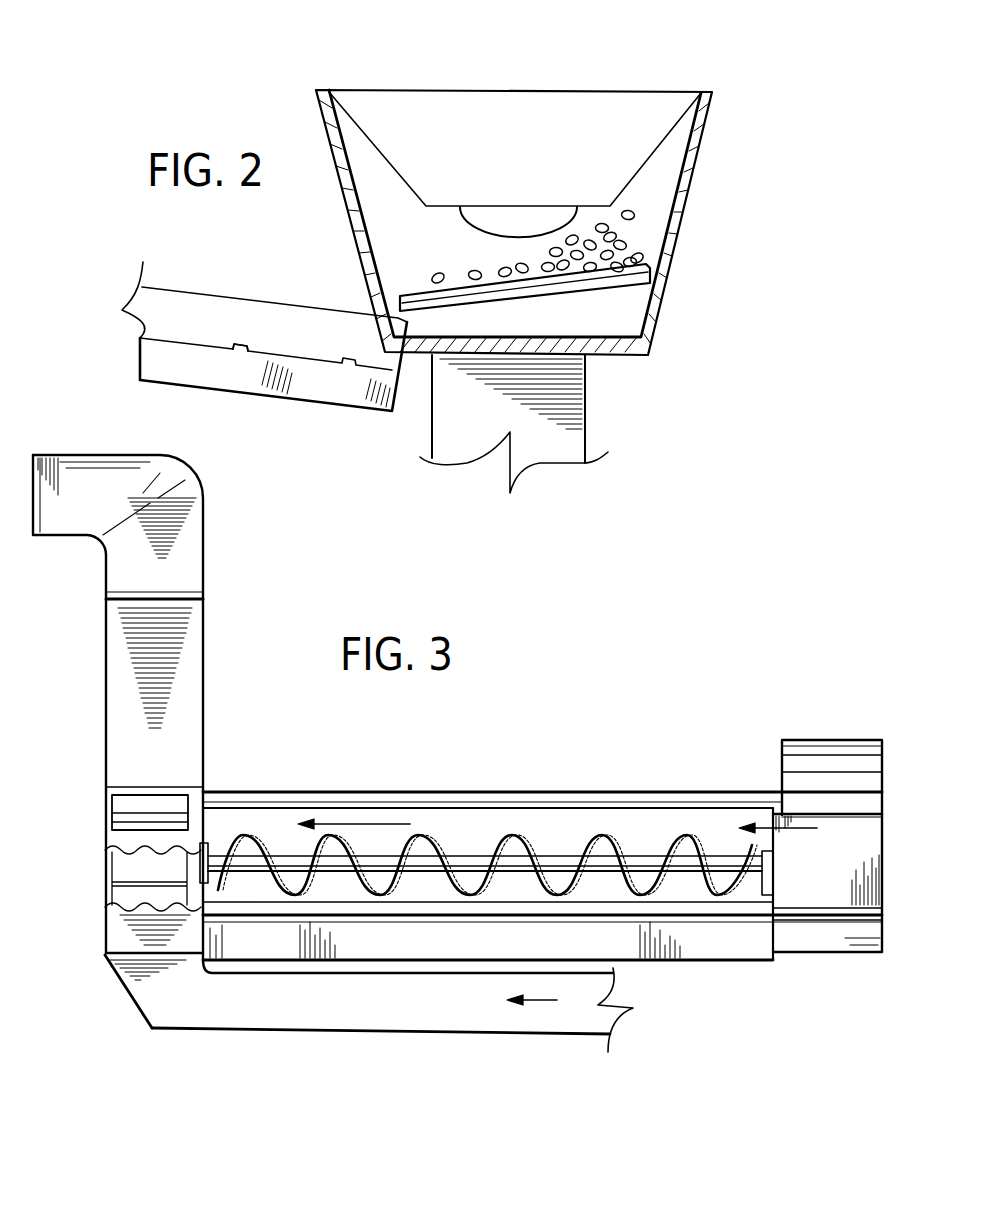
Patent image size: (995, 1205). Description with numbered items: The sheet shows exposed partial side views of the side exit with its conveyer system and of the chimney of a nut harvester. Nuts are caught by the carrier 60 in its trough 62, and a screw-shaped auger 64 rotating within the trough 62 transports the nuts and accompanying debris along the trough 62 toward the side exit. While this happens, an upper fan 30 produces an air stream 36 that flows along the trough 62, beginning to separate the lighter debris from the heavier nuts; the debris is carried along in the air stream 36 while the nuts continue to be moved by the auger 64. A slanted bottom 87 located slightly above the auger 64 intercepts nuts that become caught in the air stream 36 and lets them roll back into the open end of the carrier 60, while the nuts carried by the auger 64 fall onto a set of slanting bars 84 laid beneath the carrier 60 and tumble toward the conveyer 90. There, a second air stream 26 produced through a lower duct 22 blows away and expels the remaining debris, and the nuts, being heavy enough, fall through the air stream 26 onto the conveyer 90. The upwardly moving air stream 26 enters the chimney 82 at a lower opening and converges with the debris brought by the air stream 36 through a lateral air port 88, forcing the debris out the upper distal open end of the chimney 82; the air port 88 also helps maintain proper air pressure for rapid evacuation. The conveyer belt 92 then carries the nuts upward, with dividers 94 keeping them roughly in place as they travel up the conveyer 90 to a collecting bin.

In FIG. 3, the lower duct 22 is at (417, 1013).
In FIG. 3, the air stream 26 is at (167, 978).
In FIG. 3, the upper fan 30 is at (823, 738).
In FIG. 3, the air stream 36 is at (340, 823).
In FIG. 2, the carrier 60 is at (490, 217).
In FIG. 3, the carrier 60 is at (486, 805).
In FIG. 3, the trough 62 is at (465, 827).
In FIG. 3, the screw-shaped auger 64 is at (522, 842).
In FIG. 3, the chimney 82 is at (187, 570).
In FIG. 2, the slanting bars 84 is at (633, 275).
In FIG. 2, the slanted bottom 87 is at (513, 118).
In FIG. 3, the lateral air port 88 is at (178, 805).
In FIG. 2, the conveyer 90 is at (245, 368).
In FIG. 2, the conveyer belt 92 is at (307, 357).
In FIG. 2, the dividers 94 is at (243, 348).